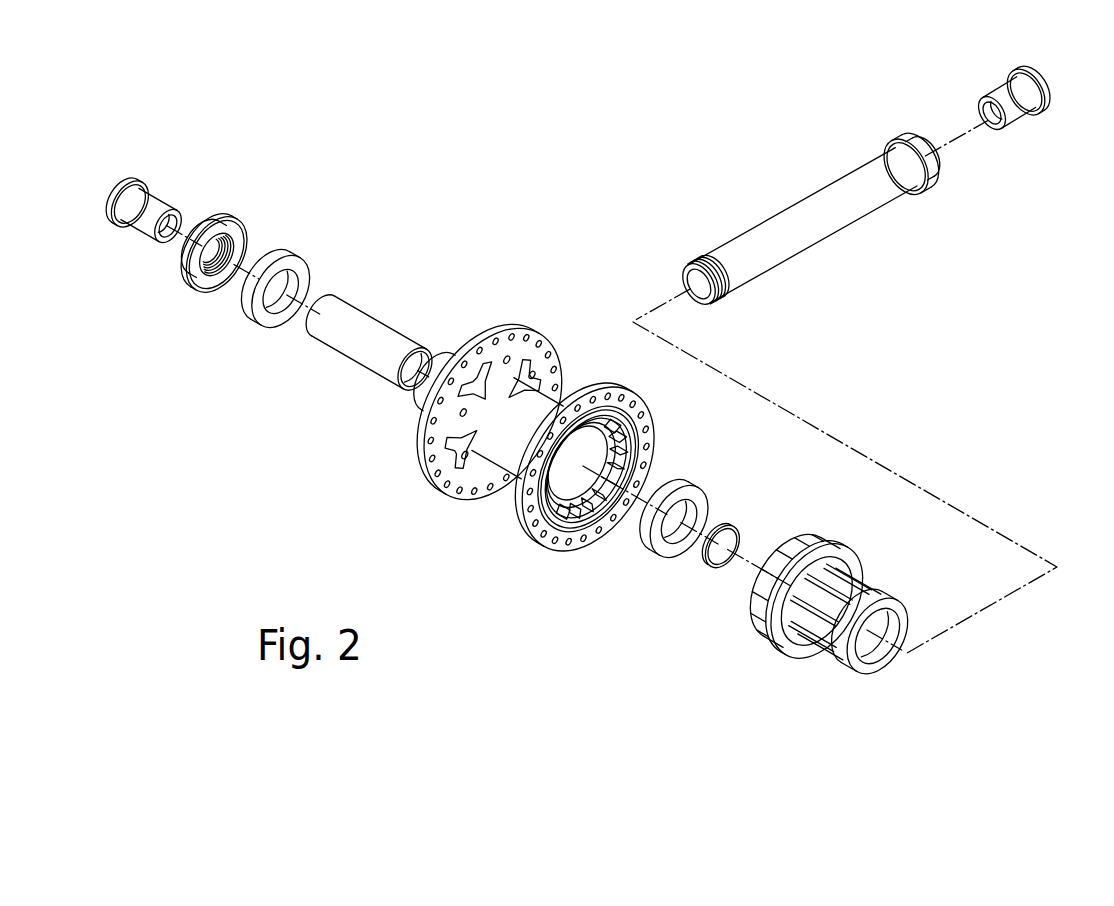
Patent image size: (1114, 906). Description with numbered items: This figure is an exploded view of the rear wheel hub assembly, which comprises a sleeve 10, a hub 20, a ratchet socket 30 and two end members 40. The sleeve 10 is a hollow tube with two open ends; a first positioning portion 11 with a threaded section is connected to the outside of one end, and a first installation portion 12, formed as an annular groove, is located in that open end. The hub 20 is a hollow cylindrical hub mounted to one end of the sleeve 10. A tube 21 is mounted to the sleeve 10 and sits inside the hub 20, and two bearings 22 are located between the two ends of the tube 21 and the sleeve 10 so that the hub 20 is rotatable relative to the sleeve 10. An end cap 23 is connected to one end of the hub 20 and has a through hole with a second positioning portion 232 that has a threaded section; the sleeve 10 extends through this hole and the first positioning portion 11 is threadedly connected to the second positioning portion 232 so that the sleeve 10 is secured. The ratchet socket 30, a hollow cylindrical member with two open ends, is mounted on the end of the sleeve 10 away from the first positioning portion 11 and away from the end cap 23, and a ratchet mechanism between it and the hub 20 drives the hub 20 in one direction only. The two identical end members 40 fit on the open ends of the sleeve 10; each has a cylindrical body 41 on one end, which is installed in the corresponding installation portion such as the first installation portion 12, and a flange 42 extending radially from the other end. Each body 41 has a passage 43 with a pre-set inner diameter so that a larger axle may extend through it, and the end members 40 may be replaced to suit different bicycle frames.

The sleeve 10 is at (775, 217).
The first positioning portion 11 is at (698, 260).
The first installation portion 12 is at (692, 280).
The hub 20 is at (495, 524).
The tube 21 is at (370, 330).
The bearing 22 is at (285, 256).
The end cap 23 is at (228, 257).
The second positioning portion 232 is at (222, 278).
The ratchet socket 30 is at (739, 637).
The end member 40 is at (598, 180).
The cylindrical body 41 is at (133, 226).
The flange 42 is at (127, 180).
The passage 43 is at (173, 213).